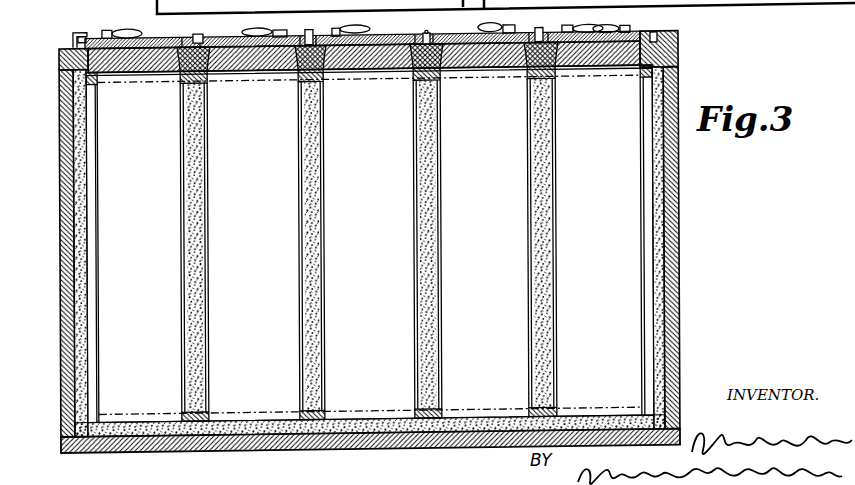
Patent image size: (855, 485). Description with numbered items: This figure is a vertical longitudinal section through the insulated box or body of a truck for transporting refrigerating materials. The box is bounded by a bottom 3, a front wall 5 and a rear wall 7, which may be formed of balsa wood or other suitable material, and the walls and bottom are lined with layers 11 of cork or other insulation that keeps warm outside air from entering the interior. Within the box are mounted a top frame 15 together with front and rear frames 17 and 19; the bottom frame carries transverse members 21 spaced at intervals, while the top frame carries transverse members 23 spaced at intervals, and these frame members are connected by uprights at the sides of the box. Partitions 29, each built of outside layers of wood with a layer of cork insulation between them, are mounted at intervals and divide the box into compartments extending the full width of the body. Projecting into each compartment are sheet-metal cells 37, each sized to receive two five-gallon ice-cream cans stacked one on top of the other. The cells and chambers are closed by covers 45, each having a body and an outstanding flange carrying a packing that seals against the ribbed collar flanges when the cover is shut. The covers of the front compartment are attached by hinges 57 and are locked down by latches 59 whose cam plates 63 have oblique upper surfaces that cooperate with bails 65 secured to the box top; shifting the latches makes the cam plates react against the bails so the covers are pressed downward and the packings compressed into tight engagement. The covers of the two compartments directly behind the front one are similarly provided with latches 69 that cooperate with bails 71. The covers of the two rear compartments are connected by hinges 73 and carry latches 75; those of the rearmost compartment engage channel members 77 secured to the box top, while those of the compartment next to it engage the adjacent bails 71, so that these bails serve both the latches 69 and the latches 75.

The bottom 3 is at (145, 455).
The front wall 5 is at (679, 304).
The rear wall 7 is at (46, 250).
The layers of insulation material 11 is at (78, 187).
The top frame 15 is at (600, 90).
The front frame 17 is at (648, 282).
The rear frame 19 is at (88, 251).
The transverse members of bottom frame 21 is at (208, 416).
The transverse members of top frame 23 is at (97, 86).
The partitions 29 is at (208, 235).
The cells 37 is at (369, 245).
The covers 45 is at (225, 48).
The hinges 57 is at (610, 37).
The latches 59 is at (575, 26).
The cam plates 63 is at (541, 37).
The bails 65 is at (499, 33).
The latches 69 is at (372, 40).
The bails 71 is at (356, 21).
The hinges 73 is at (151, 37).
The latches 75 is at (104, 31).
The channel members 77 is at (70, 37).